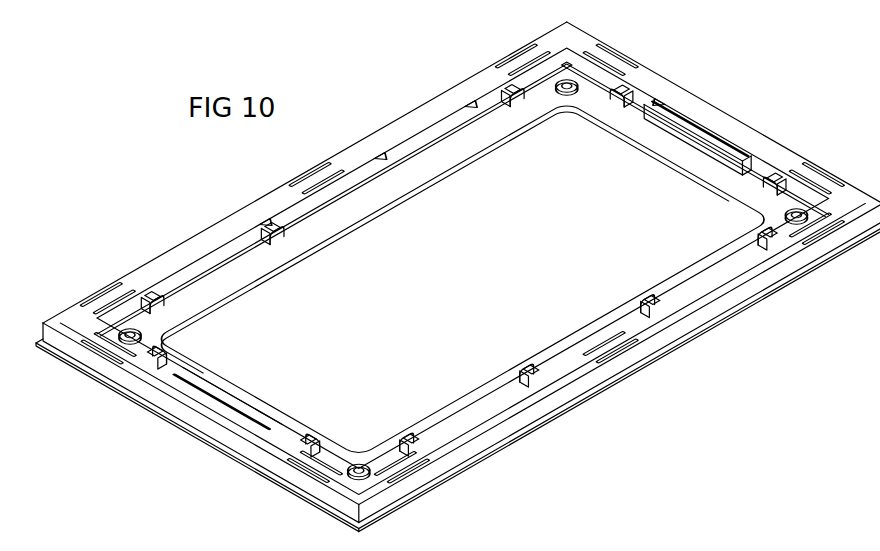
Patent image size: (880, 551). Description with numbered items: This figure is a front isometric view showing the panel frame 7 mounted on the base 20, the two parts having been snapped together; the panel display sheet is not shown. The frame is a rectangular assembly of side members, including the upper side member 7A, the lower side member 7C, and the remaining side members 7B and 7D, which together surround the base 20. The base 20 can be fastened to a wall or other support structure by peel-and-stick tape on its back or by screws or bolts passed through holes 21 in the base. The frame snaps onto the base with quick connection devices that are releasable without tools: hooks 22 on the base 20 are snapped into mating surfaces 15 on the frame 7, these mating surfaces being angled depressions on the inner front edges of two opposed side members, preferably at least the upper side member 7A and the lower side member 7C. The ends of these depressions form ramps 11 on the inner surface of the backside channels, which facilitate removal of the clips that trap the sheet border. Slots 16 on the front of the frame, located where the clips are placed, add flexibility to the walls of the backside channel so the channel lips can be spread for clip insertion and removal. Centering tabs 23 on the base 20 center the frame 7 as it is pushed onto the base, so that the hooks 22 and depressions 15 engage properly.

The panel frame 7 is at (253, 207).
The upper side member 7A is at (770, 147).
The side member of the frame 7B is at (653, 325).
The lower side member 7C is at (278, 438).
The side member of the frame 7D is at (358, 152).
The ramp 11 is at (658, 86).
The mating surface 15 is at (708, 125).
The slot 16 is at (613, 338).
The base 20 is at (340, 222).
The hole 21 is at (361, 464).
The hook 22 is at (695, 132).
The centering tab 23 is at (276, 245).